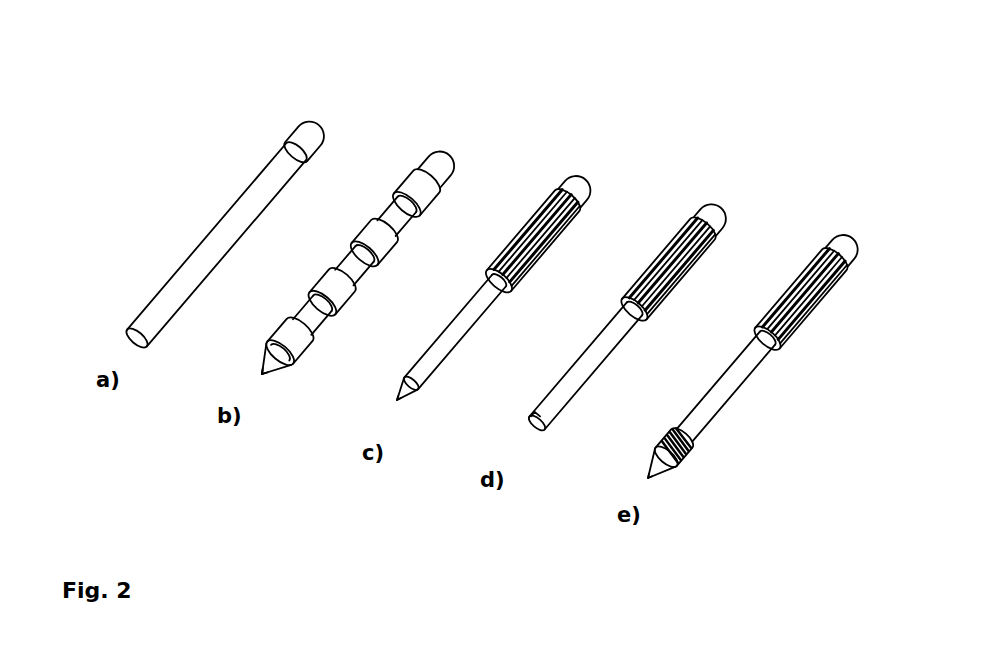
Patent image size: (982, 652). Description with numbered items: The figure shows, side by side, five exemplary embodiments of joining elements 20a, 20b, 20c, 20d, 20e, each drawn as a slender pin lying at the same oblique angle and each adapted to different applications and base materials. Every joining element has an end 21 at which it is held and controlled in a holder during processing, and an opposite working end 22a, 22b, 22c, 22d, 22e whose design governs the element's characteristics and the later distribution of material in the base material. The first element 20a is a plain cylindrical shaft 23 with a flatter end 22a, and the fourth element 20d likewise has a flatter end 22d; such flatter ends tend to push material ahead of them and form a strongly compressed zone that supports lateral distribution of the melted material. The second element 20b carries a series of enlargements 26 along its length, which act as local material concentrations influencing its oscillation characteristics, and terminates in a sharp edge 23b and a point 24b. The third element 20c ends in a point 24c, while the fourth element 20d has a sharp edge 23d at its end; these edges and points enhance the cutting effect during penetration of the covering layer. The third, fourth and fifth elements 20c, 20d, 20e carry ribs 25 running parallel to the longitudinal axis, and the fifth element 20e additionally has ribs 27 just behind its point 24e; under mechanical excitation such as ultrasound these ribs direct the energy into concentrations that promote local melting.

The joining element 20a is at (216, 244).
The joining element 20b is at (295, 268).
The joining element 20c is at (433, 286).
The joining element 20d is at (601, 317).
The joining element 20e is at (692, 358).
The end 21 is at (304, 133).
The end 22a is at (140, 349).
The end 22b is at (265, 376).
The end 22c is at (403, 395).
The end 22d is at (543, 432).
The end 22e is at (657, 480).
The cylindrical shaft 23 is at (144, 333).
The sharp edge 23b is at (305, 338).
The sharp edge 23d is at (543, 410).
The point 24b is at (253, 371).
The point 24c is at (396, 400).
The point 24e is at (642, 476).
The ribs 25 is at (540, 268).
The enlargements 26 is at (415, 182).
The ribs 27 is at (697, 460).